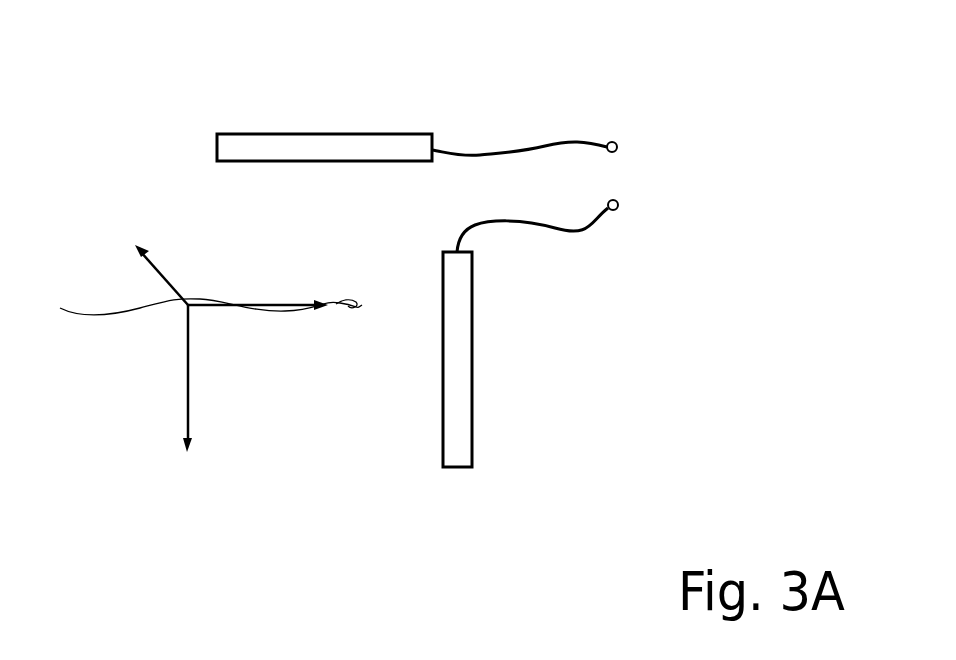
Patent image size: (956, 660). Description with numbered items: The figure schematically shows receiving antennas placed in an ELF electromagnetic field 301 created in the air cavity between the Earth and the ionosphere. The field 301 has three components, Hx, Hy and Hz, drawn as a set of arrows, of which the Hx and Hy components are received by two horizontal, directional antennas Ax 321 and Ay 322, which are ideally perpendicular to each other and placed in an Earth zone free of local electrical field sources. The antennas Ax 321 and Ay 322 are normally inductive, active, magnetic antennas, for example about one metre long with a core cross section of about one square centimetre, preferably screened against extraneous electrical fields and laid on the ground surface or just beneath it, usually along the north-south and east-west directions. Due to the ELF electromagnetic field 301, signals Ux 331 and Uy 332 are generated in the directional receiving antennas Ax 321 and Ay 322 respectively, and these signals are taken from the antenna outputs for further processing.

The ELF electromagnetic field 301 is at (190, 308).
The receiving antenna Ax 321 is at (380, 142).
The receiving antenna Ay 322 is at (457, 402).
The signal Ux 331 is at (611, 142).
The signal Uy 332 is at (617, 210).